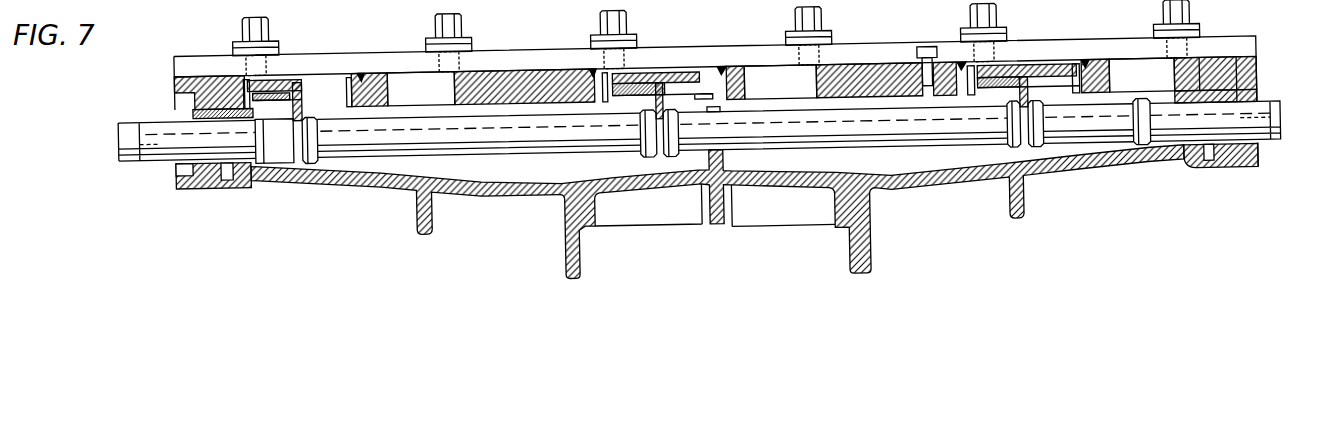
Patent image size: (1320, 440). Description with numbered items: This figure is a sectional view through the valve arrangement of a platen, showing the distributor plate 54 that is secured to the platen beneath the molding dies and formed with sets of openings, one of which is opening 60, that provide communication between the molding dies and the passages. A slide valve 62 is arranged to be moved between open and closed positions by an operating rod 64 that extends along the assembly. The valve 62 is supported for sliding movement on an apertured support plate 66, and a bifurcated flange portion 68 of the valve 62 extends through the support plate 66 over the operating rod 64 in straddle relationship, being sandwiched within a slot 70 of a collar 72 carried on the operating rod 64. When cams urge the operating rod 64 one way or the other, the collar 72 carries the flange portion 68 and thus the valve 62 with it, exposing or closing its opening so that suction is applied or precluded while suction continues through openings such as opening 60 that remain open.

The distributor plate 54 is at (483, 81).
The opening 60 is at (417, 85).
The slide valve 62 is at (268, 110).
The operating rod 64 is at (492, 146).
The apertured support plate 66 is at (278, 97).
The bifurcated flange portion 68 is at (298, 108).
The slot 70 is at (274, 141).
The collar 72 is at (313, 151).